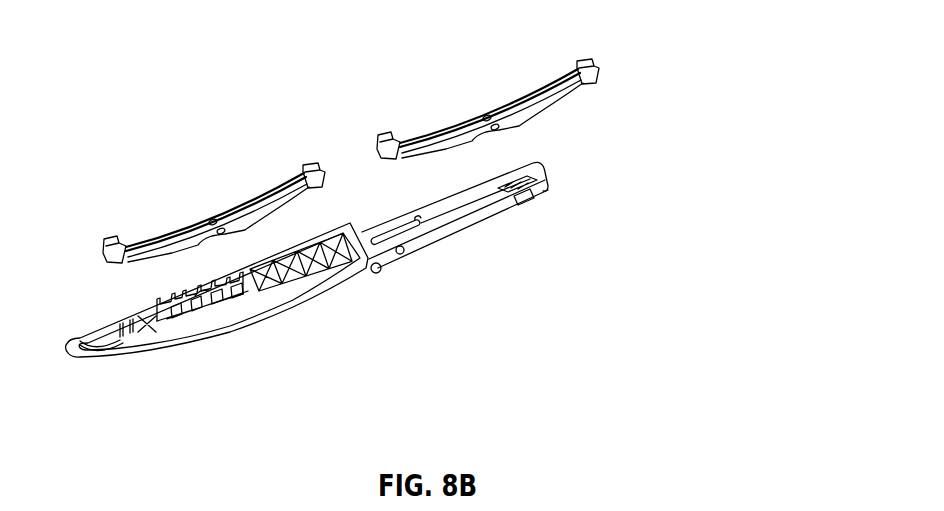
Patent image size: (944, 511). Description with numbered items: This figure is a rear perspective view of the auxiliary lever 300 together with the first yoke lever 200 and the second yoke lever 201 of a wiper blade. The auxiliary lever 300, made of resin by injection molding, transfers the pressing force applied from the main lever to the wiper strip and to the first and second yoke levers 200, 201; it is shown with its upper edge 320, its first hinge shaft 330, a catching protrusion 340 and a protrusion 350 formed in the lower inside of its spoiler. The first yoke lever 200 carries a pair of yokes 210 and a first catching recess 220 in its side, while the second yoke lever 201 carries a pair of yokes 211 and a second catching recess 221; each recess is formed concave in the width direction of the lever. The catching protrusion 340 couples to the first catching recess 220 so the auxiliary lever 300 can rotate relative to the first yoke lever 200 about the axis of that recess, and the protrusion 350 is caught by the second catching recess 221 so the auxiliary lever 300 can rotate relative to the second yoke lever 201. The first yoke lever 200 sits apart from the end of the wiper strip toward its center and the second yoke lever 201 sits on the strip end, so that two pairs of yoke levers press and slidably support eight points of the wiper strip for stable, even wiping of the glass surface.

The first yoke lever 200 is at (488, 84).
The second yoke lever 201 is at (214, 188).
The pair of yokes 210 is at (384, 136).
The pair of yokes 211 is at (112, 238).
The first catching recess 220 is at (488, 114).
The second catching recess 221 is at (215, 219).
The auxiliary lever 300 is at (339, 225).
The upper edge 320 is at (391, 229).
The first hinge shaft 330 is at (454, 210).
The catching protrusion 340 is at (548, 176).
The protrusion 350 is at (183, 316).